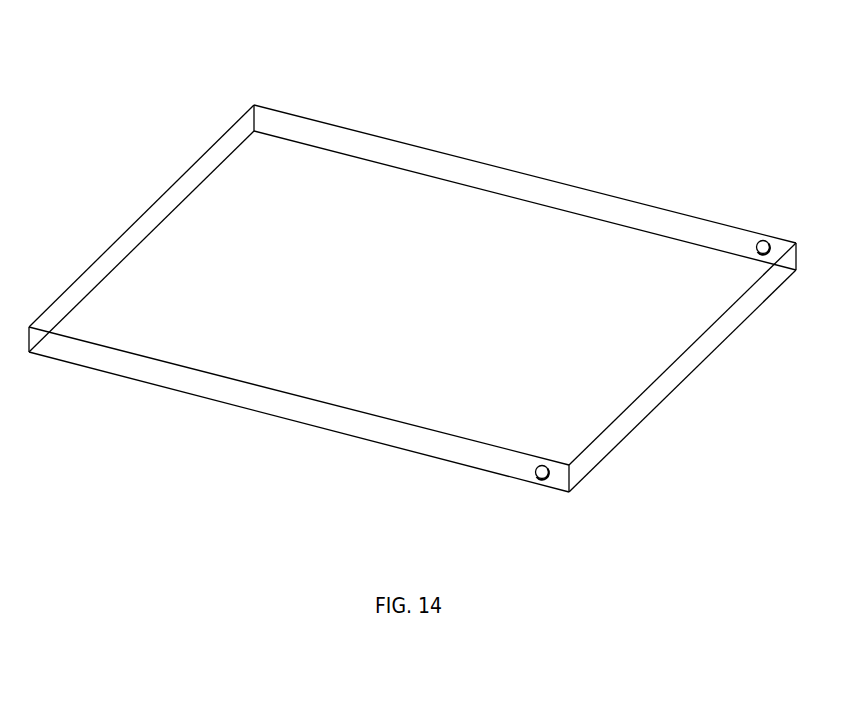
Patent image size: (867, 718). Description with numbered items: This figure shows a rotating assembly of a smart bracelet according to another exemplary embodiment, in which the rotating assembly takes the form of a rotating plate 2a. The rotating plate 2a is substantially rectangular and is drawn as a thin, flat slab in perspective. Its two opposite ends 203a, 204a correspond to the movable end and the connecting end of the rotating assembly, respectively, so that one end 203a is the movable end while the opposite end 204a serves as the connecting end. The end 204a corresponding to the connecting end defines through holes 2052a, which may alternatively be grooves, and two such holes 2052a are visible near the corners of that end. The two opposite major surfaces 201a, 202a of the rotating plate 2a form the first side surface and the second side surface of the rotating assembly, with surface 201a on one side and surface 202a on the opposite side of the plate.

The rotating plate 2a is at (412, 291).
The first surface of the rotating plate 201a is at (275, 402).
The second surface of the rotating plate 202a is at (588, 207).
The end of the rotating plate corresponding to the movable end 203a is at (137, 220).
The end of the rotating plate corresponding to the connecting end 204a is at (660, 375).
The through holes 2052a is at (540, 478).